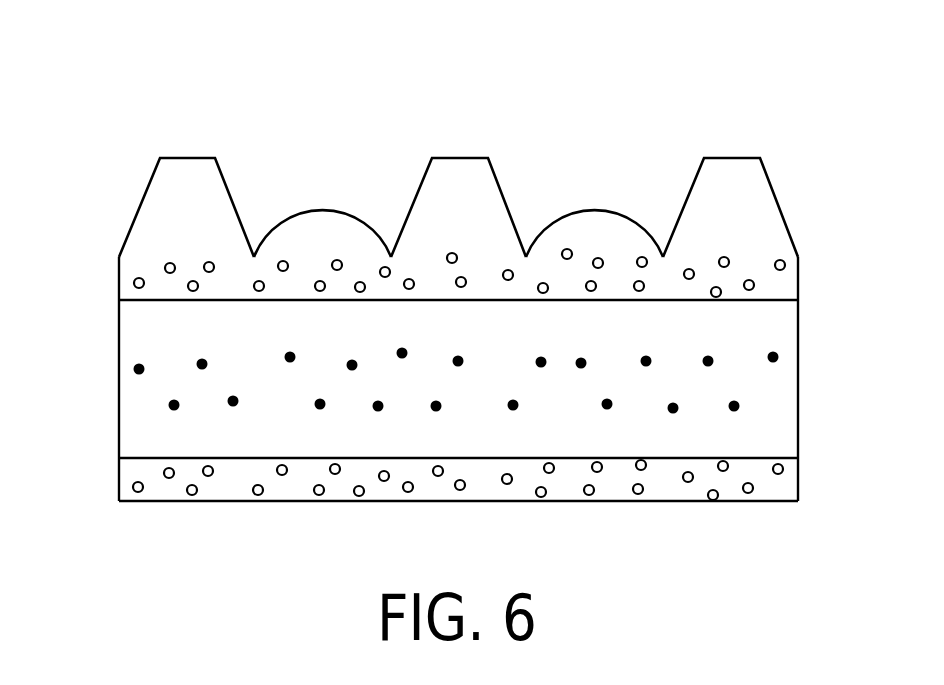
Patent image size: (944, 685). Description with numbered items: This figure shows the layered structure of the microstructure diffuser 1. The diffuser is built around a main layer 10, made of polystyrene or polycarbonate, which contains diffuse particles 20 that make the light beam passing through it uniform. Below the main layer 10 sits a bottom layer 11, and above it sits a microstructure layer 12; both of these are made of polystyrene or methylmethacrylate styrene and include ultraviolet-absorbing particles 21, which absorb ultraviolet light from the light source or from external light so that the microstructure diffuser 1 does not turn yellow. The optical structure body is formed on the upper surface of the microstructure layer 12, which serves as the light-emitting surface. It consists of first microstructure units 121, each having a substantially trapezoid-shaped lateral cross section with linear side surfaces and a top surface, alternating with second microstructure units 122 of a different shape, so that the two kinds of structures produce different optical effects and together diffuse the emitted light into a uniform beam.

The microstructure diffuser 1 is at (213, 63).
The main layer 10 is at (127, 393).
The bottom layer 11 is at (127, 478).
The microstructure layer 12 is at (127, 265).
The first microstructure unit 121 is at (172, 203).
The second microstructure unit 122 is at (325, 190).
The diffuse particles 20 is at (740, 406).
The ultraviolet-absorbing particles 21 is at (786, 265).